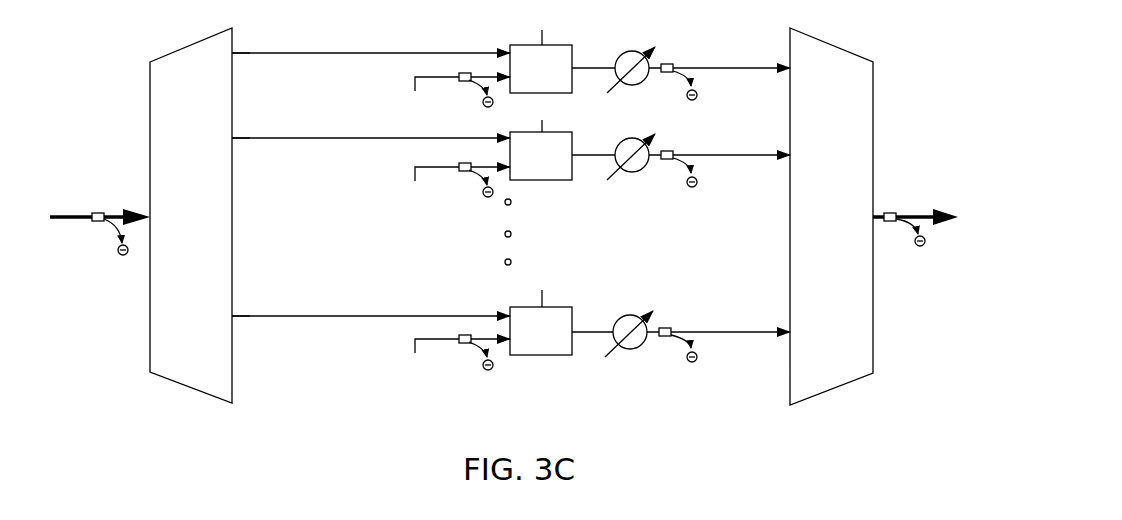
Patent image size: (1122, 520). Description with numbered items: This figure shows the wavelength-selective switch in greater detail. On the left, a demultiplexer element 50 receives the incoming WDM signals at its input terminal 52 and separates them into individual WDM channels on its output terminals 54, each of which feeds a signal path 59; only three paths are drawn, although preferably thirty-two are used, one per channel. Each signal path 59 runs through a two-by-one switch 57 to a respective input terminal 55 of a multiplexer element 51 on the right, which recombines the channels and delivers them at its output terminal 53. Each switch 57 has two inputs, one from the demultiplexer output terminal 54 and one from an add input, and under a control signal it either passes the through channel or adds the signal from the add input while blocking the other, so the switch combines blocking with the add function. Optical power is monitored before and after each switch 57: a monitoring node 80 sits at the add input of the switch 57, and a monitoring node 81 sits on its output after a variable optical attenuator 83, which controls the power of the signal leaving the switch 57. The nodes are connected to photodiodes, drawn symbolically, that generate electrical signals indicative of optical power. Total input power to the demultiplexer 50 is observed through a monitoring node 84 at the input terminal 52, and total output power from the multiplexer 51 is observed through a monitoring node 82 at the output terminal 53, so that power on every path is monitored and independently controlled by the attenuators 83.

The demultiplexer element 50 is at (232, 370).
The multiplexer element 51 is at (790, 370).
The input terminal 52 is at (149, 212).
The output terminal 53 is at (873, 222).
The output terminals 54 is at (236, 55).
The input terminals 55 is at (790, 72).
The 2×1 switch 57 is at (512, 46).
The signal paths 59 is at (292, 55).
The monitoring node 80 is at (459, 75).
The monitoring node 81 is at (672, 64).
The monitoring node 82 is at (891, 212).
The variable optical attenuator 83 is at (618, 56).
The monitoring node 84 is at (98, 212).